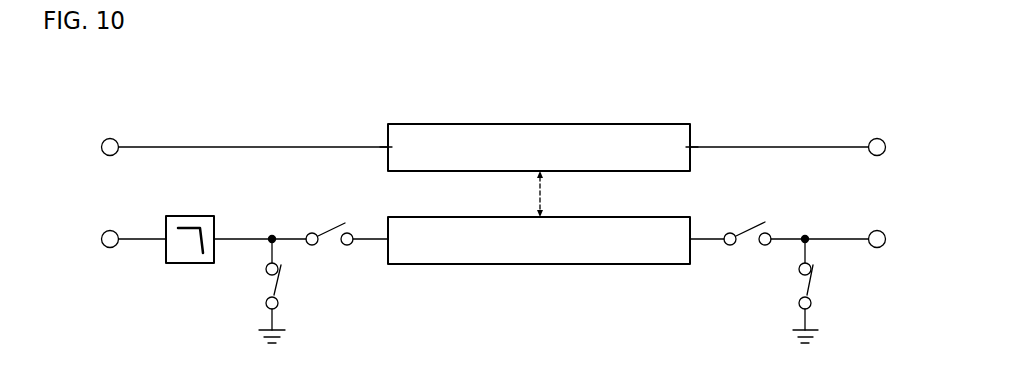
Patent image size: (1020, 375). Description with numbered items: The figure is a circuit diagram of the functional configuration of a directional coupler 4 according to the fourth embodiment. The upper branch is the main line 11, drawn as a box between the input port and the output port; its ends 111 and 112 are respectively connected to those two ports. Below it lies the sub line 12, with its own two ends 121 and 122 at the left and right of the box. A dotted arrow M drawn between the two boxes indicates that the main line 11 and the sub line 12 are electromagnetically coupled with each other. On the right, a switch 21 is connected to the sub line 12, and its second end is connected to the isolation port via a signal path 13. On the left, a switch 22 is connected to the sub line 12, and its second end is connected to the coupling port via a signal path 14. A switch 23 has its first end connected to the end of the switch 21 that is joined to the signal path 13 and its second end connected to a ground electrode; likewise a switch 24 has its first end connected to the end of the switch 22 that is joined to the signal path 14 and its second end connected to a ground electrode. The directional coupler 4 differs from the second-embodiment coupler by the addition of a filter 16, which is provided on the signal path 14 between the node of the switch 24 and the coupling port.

The directional coupler 4 is at (856, 74).
The main line 11 is at (493, 124).
The end of main line 111 is at (387, 146).
The end of main line 112 is at (693, 146).
The sub line 12 is at (493, 217).
The first end of sub line (isolation side) 121 is at (693, 238).
The second end of sub line (coupling side) 122 is at (387, 238).
The signal path 13 is at (830, 239).
The signal path 14 is at (250, 239).
The filter 16 is at (190, 217).
The switch 21 is at (748, 228).
The switch 22 is at (335, 228).
The switch 23 is at (813, 282).
The switch 24 is at (281, 282).
The dotted arrow M is at (545, 202).